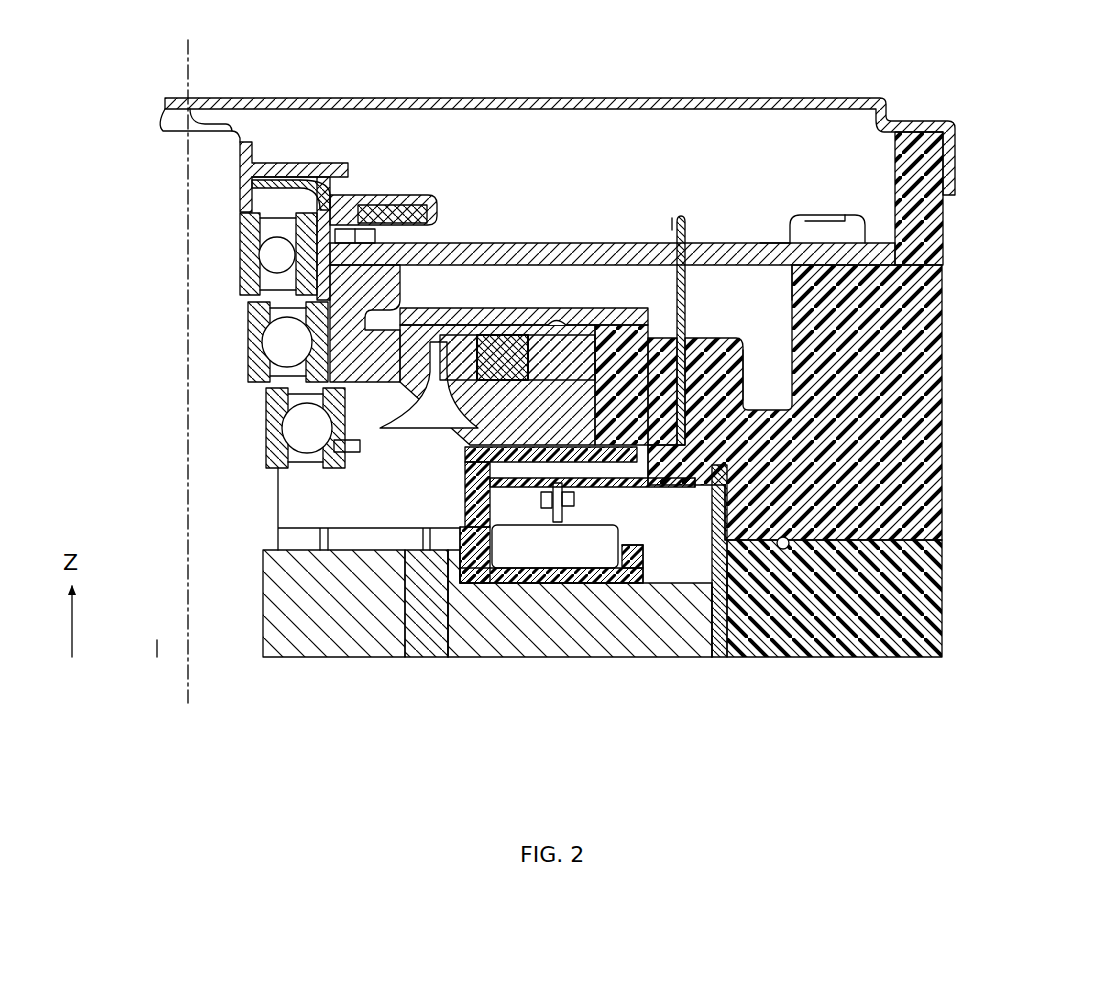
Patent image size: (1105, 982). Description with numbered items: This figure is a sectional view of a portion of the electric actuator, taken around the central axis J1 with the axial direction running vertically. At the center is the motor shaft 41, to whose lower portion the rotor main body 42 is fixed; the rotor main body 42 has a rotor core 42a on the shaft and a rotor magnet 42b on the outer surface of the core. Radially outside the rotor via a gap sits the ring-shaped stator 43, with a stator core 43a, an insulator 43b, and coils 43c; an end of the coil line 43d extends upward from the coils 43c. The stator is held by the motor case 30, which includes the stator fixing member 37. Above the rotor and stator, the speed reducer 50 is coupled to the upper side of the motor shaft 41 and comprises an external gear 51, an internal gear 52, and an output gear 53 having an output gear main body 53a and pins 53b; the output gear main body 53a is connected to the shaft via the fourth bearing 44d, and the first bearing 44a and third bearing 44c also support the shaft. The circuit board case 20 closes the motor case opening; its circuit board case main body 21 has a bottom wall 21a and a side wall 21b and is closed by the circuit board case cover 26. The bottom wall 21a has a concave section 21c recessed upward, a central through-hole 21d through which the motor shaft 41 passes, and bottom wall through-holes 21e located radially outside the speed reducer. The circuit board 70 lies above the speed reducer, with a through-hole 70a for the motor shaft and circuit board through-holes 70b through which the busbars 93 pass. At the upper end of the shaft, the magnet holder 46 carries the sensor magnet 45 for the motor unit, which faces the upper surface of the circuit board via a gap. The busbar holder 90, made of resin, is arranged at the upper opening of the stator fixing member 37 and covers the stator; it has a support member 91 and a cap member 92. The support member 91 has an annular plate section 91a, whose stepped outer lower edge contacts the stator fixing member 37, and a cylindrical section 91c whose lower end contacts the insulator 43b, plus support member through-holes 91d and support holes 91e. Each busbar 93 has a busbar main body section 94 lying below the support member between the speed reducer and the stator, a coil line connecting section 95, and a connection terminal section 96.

The central axis J1 is at (205, 58).
The circuit board case 20 is at (950, 236).
The circuit board case main body 21 is at (843, 484).
The bottom wall 21a is at (765, 408).
The side wall 21b is at (922, 316).
The concave section 21c is at (725, 458).
The central through-hole 21d is at (556, 325).
The bottom wall through-holes 21e is at (700, 492).
The circuit board case cover 26 is at (760, 97).
The motor case 30 is at (950, 615).
The stator fixing member 37 is at (727, 615).
The motor shaft 41 is at (157, 657).
The rotor main body 42 is at (355, 655).
The rotor core 42a is at (310, 600).
The rotor magnet 42b is at (422, 566).
The stator 43 is at (603, 624).
The stator core 43a is at (722, 575).
The insulator 43b is at (430, 590).
The coils 43c is at (597, 590).
The coil line 43d is at (580, 600).
The first bearing 44a is at (272, 258).
The third bearing 44c is at (282, 342).
The fourth bearing 44d is at (300, 428).
The sensor magnet for the motor unit 45 is at (418, 208).
The magnet holder 46 is at (315, 160).
The speed reducer 50 is at (586, 340).
The external gear 51 is at (394, 298).
The internal gear 52 is at (586, 346).
The output gear 53 is at (504, 272).
The output gear main body 53a is at (527, 400).
The pins 53b is at (448, 330).
The circuit board 70 is at (776, 243).
The through-hole 70a is at (344, 163).
The circuit board through-holes 70b is at (674, 216).
The busbar holder 90 is at (790, 552).
The support member 91 is at (610, 582).
The annular plate section 91a is at (701, 486).
The cylindrical section 91c is at (458, 530).
The support member through-holes 91d is at (626, 572).
The support holes 91e is at (675, 564).
The cap member 92 is at (462, 490).
The busbars 93 is at (745, 565).
The busbar main body section 94 is at (683, 500).
The coil line connecting section 95 is at (548, 512).
The connection terminal section 96 is at (686, 220).